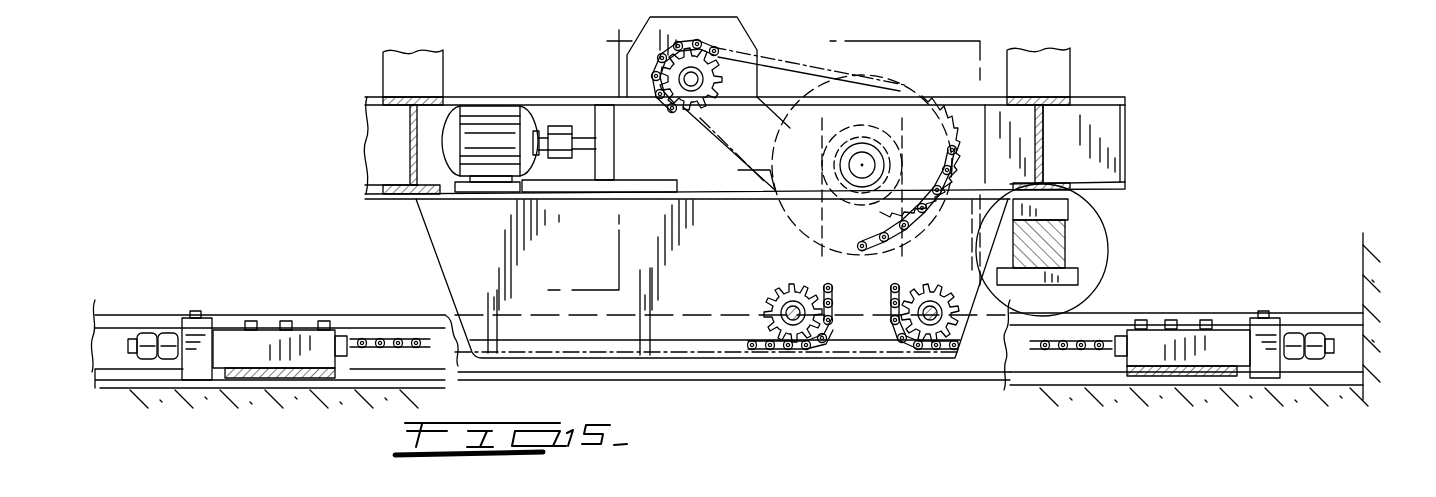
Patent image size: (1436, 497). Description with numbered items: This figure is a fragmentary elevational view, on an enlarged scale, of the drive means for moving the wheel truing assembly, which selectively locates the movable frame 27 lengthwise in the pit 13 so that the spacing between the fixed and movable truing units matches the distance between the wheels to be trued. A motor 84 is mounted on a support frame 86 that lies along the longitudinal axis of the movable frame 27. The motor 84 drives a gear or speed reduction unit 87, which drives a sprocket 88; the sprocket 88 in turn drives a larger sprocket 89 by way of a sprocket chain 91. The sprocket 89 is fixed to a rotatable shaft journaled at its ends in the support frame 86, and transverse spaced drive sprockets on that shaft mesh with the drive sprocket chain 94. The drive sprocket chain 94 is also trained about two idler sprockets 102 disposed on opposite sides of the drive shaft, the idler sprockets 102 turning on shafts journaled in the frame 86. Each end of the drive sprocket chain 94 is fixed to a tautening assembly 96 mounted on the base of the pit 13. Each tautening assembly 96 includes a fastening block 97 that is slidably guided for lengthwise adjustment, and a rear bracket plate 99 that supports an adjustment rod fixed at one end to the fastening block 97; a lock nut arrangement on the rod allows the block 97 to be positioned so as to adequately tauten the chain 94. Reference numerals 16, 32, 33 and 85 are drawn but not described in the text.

The pit 13 is at (1225, 402).
The section line 16 is at (110, 358).
The movable frame 27 is at (1134, 144).
The support pedestal 32 is at (1100, 246).
The rail 33 is at (401, 317).
The motor 84 is at (494, 120).
The housing bracket 85 is at (641, 23).
The support frame 86 is at (690, 325).
The gear or speed reduction unit 87 is at (752, 29).
The sprocket 88 is at (690, 118).
The sprocket 89 is at (898, 110).
The sprocket chain 91 is at (950, 160).
The drive sprocket chain 94 is at (862, 272).
The tautening assemblies 96 is at (223, 311).
The fastening block 97 is at (337, 350).
The rear bracket plate 99 is at (200, 337).
The idler sprockets 102 is at (771, 296).